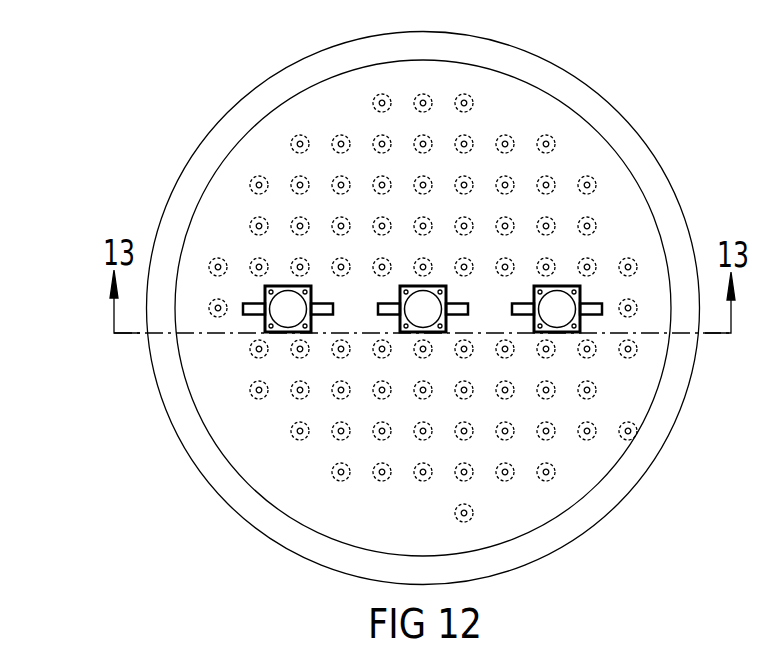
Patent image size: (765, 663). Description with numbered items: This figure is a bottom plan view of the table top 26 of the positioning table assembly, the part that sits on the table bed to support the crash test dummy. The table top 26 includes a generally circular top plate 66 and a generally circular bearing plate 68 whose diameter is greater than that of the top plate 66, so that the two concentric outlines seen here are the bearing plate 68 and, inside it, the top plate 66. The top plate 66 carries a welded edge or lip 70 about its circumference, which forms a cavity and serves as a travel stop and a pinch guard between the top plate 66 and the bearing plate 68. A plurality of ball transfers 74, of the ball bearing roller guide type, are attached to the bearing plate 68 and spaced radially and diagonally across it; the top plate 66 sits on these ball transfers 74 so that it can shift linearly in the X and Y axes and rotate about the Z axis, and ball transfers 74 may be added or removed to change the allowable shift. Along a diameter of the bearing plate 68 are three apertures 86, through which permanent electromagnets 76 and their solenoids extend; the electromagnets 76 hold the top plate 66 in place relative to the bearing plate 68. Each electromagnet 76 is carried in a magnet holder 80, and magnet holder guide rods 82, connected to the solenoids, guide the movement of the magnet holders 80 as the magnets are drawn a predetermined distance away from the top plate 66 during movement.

The table top 26 is at (423, 298).
The top plate 66 is at (652, 462).
The bearing plate 68 is at (438, 298).
The lip 70 is at (652, 408).
The ball transfers 74 is at (594, 224).
The permanent electromagnets 76 is at (583, 290).
The magnet holders 80 is at (558, 309).
The magnet holder guide rods 82 is at (578, 333).
The apertures 86 is at (259, 349).